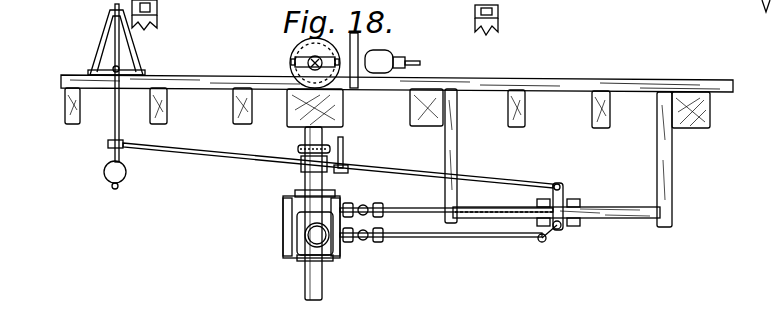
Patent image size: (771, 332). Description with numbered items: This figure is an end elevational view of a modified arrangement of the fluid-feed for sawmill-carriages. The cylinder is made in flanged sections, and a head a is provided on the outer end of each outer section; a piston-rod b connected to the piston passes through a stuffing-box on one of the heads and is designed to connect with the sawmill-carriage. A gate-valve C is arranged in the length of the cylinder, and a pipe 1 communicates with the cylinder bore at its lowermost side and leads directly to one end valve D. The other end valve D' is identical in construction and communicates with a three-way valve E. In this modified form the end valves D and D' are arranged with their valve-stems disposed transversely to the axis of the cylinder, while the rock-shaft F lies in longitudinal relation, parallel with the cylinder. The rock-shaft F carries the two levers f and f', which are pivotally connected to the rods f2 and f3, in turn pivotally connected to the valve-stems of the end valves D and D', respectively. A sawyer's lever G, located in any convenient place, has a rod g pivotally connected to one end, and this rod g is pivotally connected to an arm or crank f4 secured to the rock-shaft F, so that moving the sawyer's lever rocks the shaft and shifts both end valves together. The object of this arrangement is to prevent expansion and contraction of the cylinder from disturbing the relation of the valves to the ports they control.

The sawyer's lever G is at (117, 44).
The head a is at (298, 50).
The piston-rod b is at (291, 68).
The gate-valve C is at (360, 56).
The pipe 1 is at (305, 135).
The rod g is at (190, 151).
The three-way valve E is at (346, 172).
The end valve D is at (293, 244).
The end valve D' is at (279, 225).
The rod f3 is at (413, 208).
The rod f2 is at (451, 238).
The lever f' is at (556, 219).
The rock-shaft F is at (563, 231).
The arm or crank f4 is at (565, 192).
The lever f is at (540, 254).